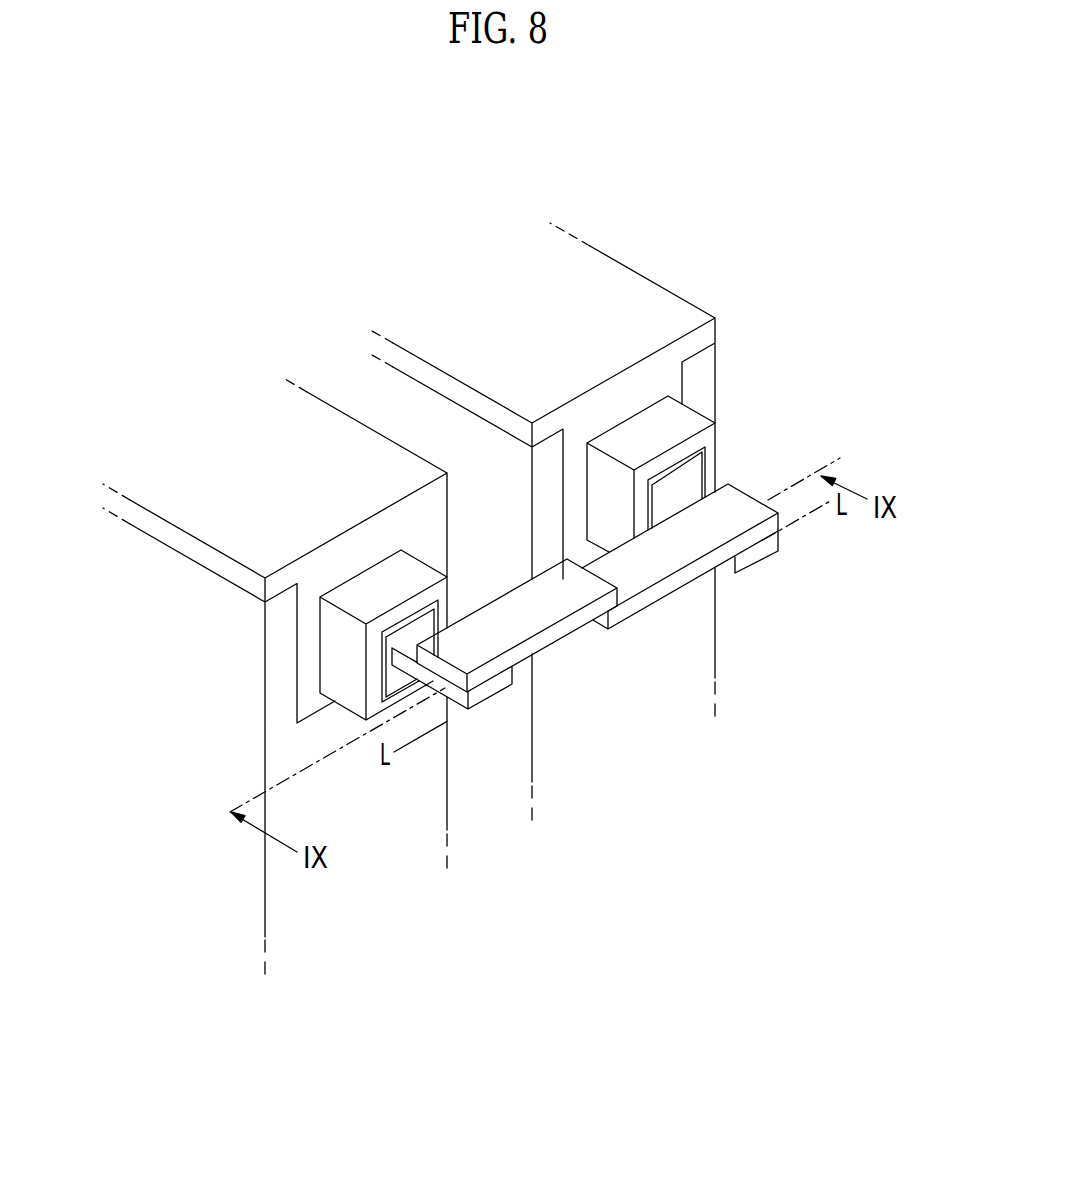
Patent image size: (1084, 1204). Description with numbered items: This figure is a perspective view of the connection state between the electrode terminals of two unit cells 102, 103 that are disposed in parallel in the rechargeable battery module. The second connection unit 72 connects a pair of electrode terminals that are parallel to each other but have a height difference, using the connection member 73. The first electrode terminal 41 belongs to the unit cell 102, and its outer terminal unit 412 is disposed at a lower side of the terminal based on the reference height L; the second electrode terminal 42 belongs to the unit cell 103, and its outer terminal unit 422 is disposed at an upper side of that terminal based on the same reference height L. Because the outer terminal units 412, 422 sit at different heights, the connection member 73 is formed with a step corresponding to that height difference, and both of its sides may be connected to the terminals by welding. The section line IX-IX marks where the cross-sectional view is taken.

The unit cell 102 is at (550, 331).
The unit cell 103 is at (282, 481).
The first electrode terminal 41 is at (309, 656).
The second electrode terminal 42 is at (726, 464).
The outer terminal unit 412 is at (492, 690).
The outer terminal unit 422 is at (766, 553).
The connection member 73 is at (650, 573).
The second connection unit 72 is at (510, 551).